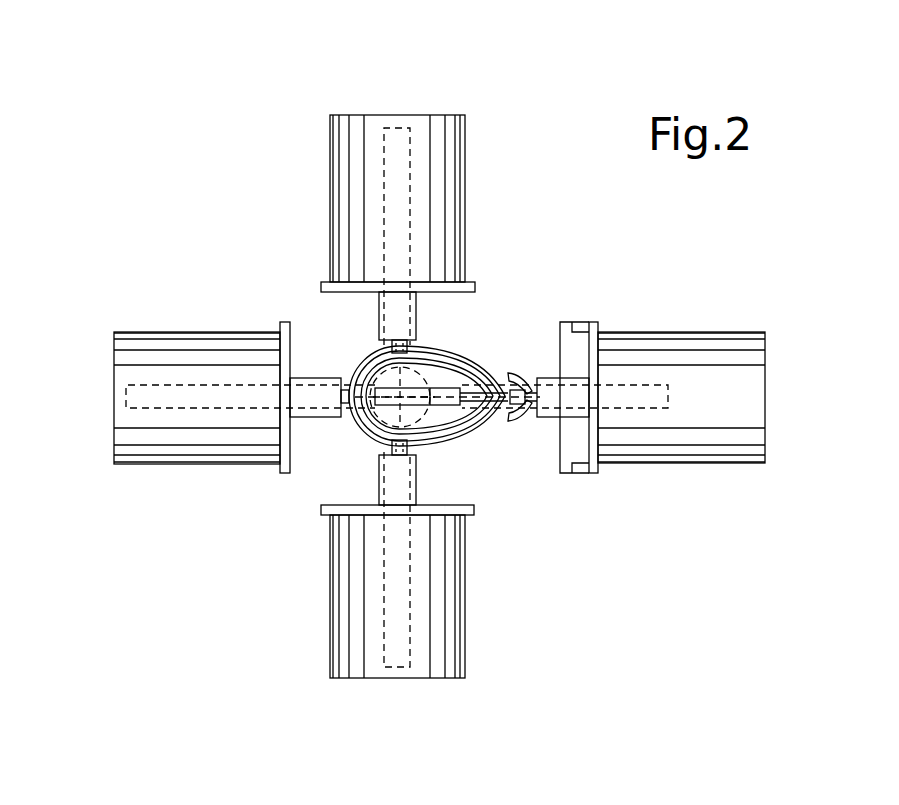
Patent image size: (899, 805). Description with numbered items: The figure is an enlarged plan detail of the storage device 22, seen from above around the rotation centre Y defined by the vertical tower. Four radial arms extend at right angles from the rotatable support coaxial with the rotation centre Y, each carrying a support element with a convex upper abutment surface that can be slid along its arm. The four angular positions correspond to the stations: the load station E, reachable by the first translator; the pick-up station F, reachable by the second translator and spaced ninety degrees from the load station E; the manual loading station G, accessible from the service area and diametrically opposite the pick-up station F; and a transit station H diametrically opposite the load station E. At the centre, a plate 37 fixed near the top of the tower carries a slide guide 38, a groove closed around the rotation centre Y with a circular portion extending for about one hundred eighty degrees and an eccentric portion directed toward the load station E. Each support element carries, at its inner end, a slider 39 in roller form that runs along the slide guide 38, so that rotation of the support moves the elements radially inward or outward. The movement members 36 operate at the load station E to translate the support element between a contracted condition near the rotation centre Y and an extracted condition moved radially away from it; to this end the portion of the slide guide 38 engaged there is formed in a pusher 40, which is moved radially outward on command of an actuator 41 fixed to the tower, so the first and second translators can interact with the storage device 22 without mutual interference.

The storage device 22 is at (542, 236).
The movement members 36 is at (456, 345).
The plate 37 is at (360, 365).
The slide guide 38 is at (478, 362).
The slider 39 is at (380, 346).
The pusher 40 is at (508, 422).
The actuator 41 is at (447, 406).
The pick-up station F is at (457, 101).
The manual loading station G is at (319, 701).
The transit station H is at (105, 344).
The load station E is at (752, 482).
The rotation centre Y is at (398, 399).